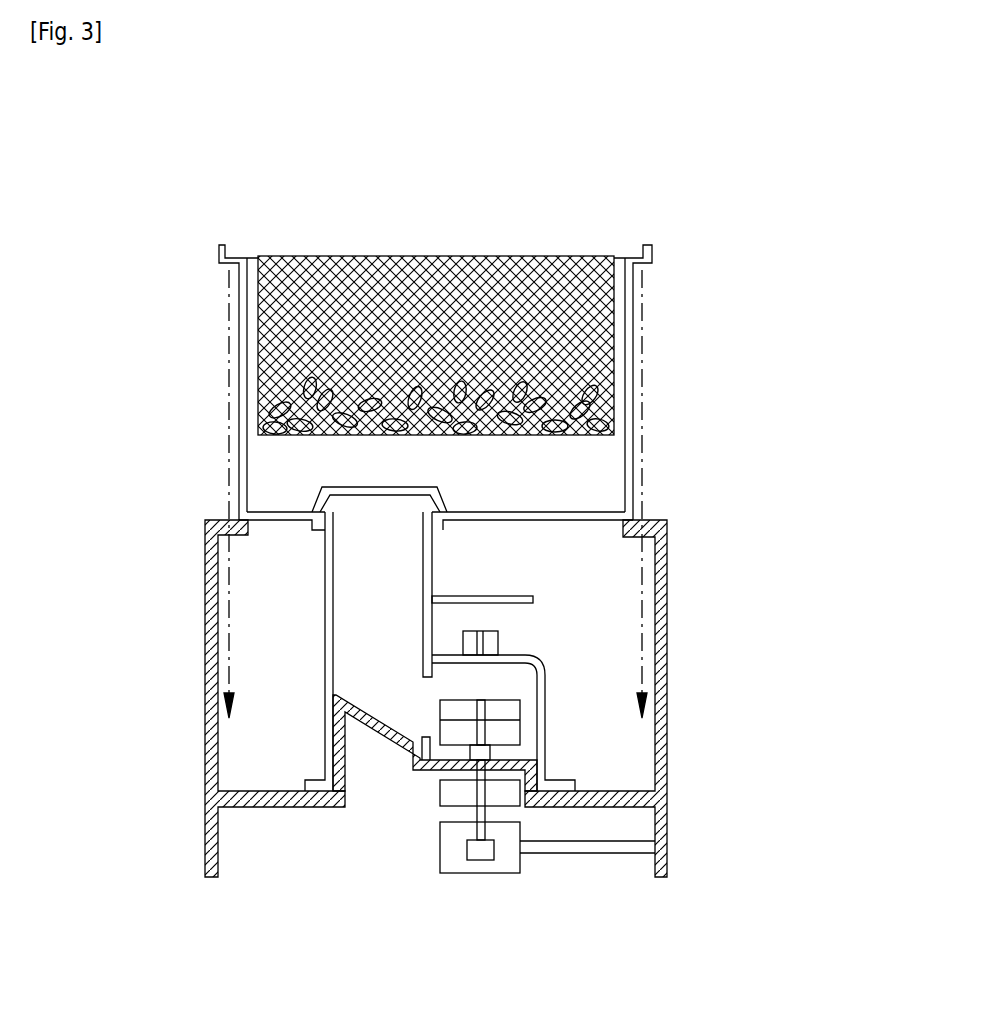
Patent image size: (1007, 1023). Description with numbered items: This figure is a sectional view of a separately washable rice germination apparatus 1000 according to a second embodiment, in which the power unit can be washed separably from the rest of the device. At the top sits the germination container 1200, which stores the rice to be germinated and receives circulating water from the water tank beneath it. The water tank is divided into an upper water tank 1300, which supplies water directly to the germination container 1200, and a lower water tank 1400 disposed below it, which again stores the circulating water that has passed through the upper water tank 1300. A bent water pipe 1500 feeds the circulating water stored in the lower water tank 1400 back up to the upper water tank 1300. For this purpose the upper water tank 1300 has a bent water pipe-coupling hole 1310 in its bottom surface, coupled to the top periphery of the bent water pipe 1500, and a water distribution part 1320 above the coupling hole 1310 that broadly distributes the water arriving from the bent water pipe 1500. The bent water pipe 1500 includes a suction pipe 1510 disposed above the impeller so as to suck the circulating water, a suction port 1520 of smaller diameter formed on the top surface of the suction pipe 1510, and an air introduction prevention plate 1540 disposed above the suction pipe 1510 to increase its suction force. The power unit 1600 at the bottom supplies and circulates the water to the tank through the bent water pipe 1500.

The separately washable rice germination apparatus 1000 is at (677, 196).
The germination container 1200 is at (388, 280).
The upper water tank 1300 is at (633, 392).
The bent water pipe-coupling hole 1310 is at (376, 512).
The water distribution part 1320 is at (353, 489).
The lower water tank 1400 is at (660, 690).
The bent water pipe 1500 is at (290, 641).
The suction pipe 1510 is at (545, 720).
The suction port 1520 is at (495, 642).
The air introduction prevention plate 1540 is at (487, 593).
The power unit 1600 is at (382, 846).